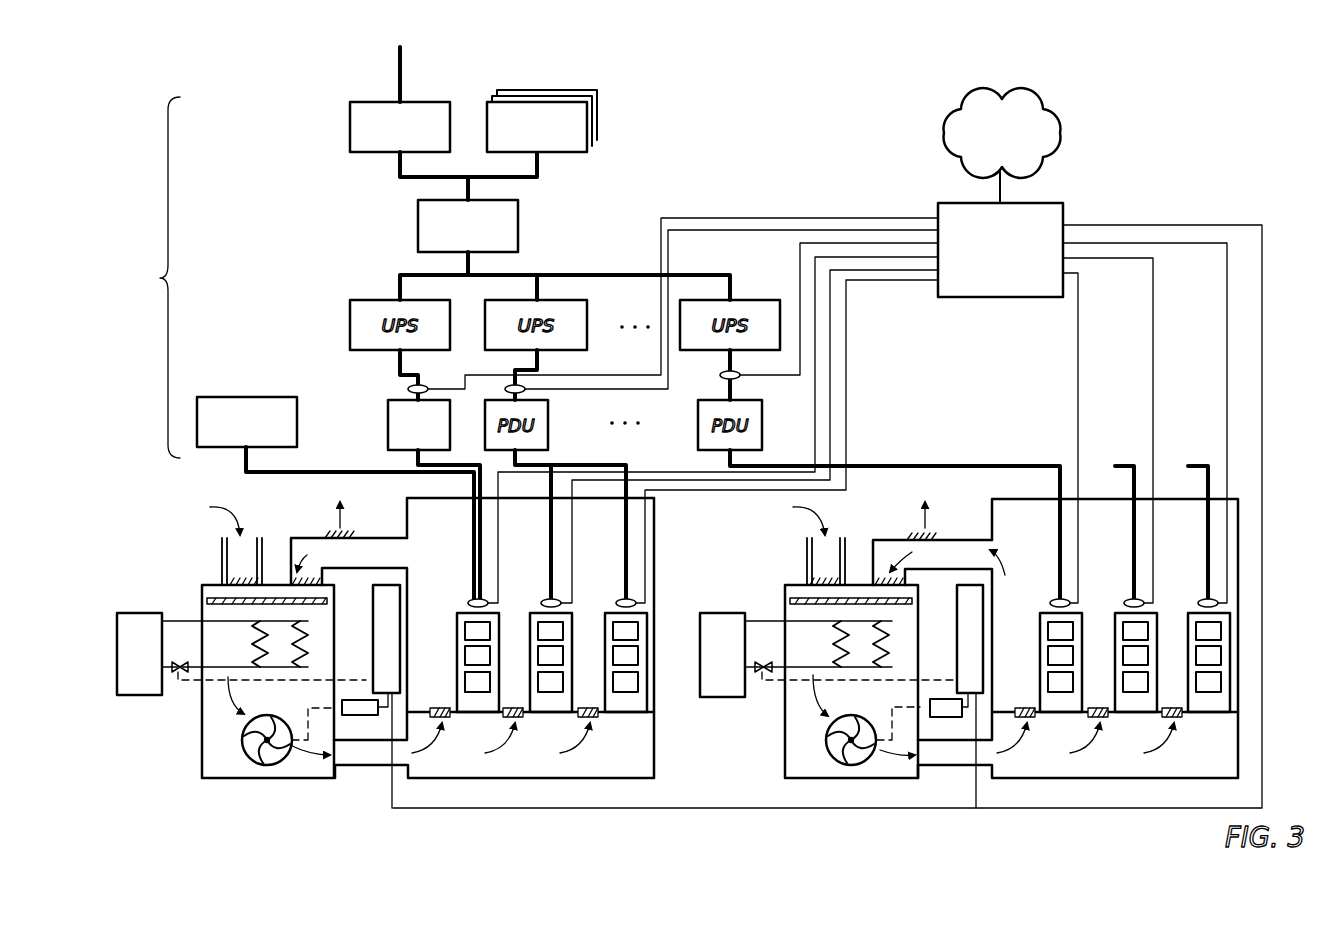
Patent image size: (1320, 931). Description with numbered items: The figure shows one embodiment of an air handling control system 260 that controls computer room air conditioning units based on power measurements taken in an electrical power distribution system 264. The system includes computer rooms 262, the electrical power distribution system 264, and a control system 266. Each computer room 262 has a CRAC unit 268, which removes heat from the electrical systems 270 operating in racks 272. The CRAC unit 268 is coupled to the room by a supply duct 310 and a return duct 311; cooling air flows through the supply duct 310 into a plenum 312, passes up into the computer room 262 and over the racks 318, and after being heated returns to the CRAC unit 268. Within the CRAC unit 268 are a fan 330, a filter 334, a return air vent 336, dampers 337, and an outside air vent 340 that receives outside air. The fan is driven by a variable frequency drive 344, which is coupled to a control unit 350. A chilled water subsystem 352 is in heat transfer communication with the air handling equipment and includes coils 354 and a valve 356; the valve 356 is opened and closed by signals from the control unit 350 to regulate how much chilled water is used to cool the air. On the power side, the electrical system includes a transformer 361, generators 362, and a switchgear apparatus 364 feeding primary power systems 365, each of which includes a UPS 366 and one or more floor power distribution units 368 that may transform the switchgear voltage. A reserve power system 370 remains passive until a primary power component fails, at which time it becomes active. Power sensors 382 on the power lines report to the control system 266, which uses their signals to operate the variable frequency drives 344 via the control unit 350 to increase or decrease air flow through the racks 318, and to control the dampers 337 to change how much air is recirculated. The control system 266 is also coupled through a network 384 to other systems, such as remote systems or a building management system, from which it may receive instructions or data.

The air handling control system 260 is at (281, 111).
The electrical power distribution system 264 is at (150, 277).
The transformer 361 is at (386, 138).
The generators 362 is at (523, 138).
The switchgear apparatus 364 is at (518, 226).
The primary power systems 365 is at (600, 263).
The UPS 366 is at (360, 280).
The floor power distribution unit 368 is at (376, 417).
The reserve power system 370 is at (247, 397).
The power sensor 382 is at (720, 375).
The network 384 is at (988, 156).
The control system 266 is at (986, 282).
The computer room 262 is at (415, 531).
The plenum 312 is at (619, 770).
The rack 272 is at (502, 618).
The rack 318 is at (457, 656).
The electrical system 270 is at (477, 693).
The control unit 350 is at (400, 598).
The variable frequency drive 344 is at (358, 716).
The supply duct 310 is at (300, 538).
The return duct 311 is at (382, 538).
The return air vent 336 is at (343, 571).
The dampers 337 is at (294, 574).
The outside air vent 340 is at (220, 537).
The filter 334 is at (210, 600).
The chilled water subsystem 352 is at (164, 609).
The coils 354 is at (253, 645).
The valve 356 is at (178, 673).
The fan 330 is at (270, 766).
The CRAC unit 268 is at (190, 742).